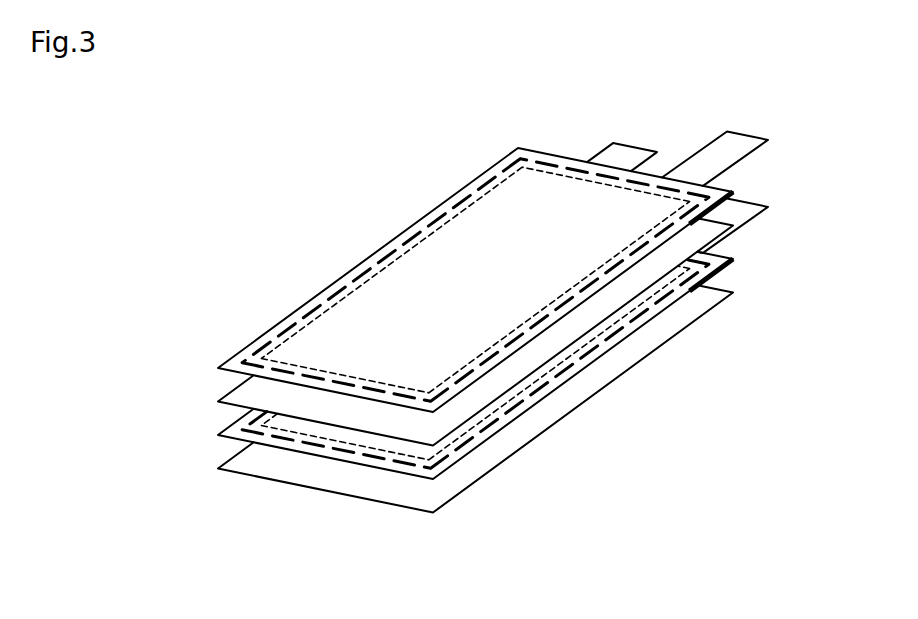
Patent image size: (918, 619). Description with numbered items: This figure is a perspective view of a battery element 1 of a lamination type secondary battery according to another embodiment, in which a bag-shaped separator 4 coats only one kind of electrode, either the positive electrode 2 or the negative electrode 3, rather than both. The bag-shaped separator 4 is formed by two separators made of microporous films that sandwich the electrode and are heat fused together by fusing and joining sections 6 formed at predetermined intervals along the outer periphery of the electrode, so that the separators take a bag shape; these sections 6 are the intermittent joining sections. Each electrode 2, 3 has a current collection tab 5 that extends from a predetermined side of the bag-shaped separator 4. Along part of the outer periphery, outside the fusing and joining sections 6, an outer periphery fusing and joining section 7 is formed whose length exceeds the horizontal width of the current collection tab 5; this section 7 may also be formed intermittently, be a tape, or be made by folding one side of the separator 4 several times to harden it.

The battery element 1 is at (364, 182).
The positive electrode 2 is at (455, 285).
The negative electrode 3 is at (355, 424).
The bag-shaped separator 4 is at (517, 149).
The current collection tab 5 is at (716, 153).
The fusing and joining section 6 is at (562, 308).
The outer periphery fusing and joining section 7 is at (727, 207).